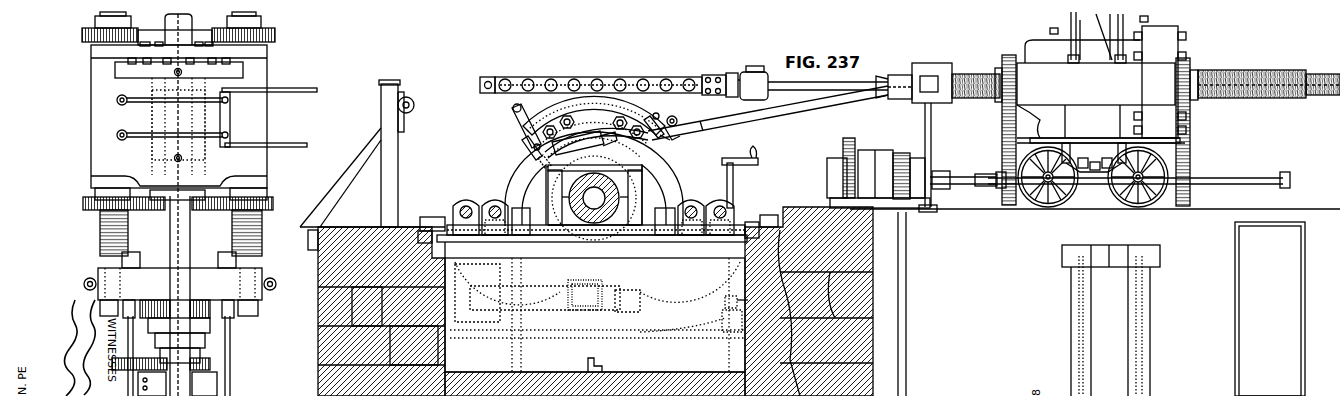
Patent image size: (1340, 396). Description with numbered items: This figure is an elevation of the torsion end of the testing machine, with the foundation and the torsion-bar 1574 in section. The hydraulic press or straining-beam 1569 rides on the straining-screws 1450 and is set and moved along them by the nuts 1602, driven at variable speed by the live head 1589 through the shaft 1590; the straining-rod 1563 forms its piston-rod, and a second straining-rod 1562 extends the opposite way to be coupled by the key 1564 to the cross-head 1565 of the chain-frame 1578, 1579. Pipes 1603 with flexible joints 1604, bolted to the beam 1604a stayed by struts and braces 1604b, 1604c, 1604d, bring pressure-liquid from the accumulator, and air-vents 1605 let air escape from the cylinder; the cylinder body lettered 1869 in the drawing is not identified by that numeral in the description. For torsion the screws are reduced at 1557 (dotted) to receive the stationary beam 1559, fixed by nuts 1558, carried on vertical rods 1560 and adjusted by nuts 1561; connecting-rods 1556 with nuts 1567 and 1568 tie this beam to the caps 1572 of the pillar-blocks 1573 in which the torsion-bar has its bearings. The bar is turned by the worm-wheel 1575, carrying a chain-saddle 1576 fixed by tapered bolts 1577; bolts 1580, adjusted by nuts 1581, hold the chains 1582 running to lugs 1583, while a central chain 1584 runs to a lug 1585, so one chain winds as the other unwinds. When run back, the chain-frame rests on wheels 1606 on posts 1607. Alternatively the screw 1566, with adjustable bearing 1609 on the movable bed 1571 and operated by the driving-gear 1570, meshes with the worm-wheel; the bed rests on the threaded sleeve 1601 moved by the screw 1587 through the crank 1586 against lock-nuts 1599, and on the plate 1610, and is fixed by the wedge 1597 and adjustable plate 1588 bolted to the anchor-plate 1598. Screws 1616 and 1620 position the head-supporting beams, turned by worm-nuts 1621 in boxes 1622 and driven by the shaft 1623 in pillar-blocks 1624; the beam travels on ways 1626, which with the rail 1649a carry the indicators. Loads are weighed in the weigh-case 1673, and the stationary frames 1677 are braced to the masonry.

The straining-screws 1450 is at (719, 156).
The connecting-rods 1556 is at (768, 113).
The reduced portions of straining-screws 1557 is at (893, 92).
The nuts 1558 is at (587, 185).
The stationary beam 1559 is at (525, 176).
The vertical rods 1560 is at (522, 197).
The nuts 1561 is at (615, 183).
The straining-rod 1562 is at (828, 83).
The straining-rod 1563 is at (752, 205).
The key 1564 is at (756, 63).
The cross-head 1565 is at (755, 86).
The screw 1566 is at (587, 292).
The nuts 1567 is at (180, 286).
The nuts 1568 is at (596, 143).
The hydraulic press or straining-beam 1569 is at (355, 177).
The driving-gear 1570 is at (473, 293).
The movable bed 1571 is at (597, 334).
The caps of pillar-blocks 1572 is at (594, 198).
The pillar-blocks 1573 is at (595, 218).
The torsion-bar 1574 is at (594, 198).
The worm-wheel 1575 is at (594, 178).
The chain-saddle 1576 is at (594, 125).
The tapered bolts 1577 is at (593, 127).
The chain-frame 1578 is at (473, 86).
The chain-frame 1579 is at (598, 79).
The bolts 1580 is at (716, 78).
The nuts 1581 is at (729, 91).
The chains 1582 is at (519, 122).
The lugs 1583 is at (525, 150).
The central chain 1584 is at (666, 120).
The lug 1585 is at (685, 126).
The crank 1586 is at (740, 155).
The screw 1587 is at (745, 185).
The adjustable plate 1588 is at (809, 301).
The live head 1589 is at (539, 248).
The shaft 1590 is at (1139, 178).
The wedge 1597 is at (756, 299).
The anchor-plate 1598 is at (736, 327).
The lock-nuts 1599 is at (720, 300).
The threaded sleeve 1601 is at (684, 324).
The nuts 1602 is at (645, 117).
The pipes 1603 is at (701, 112).
The flexible joints 1604 is at (621, 85).
The beam 1604a is at (240, 119).
The struts and braces 1604b is at (1110, 32).
The struts and braces 1604c is at (619, 77).
The struts and braces 1604d is at (1098, 32).
The air-vents 1605 is at (678, 87).
The wheels 1606 is at (422, 112).
The posts 1607 is at (365, 153).
The bearing 1609 is at (597, 295).
The plate 1610 is at (381, 311).
The screws 1616 is at (706, 224).
The screws 1620 is at (480, 217).
The worm-nuts 1621 is at (582, 210).
The boxes 1622 is at (735, 213).
The shaft 1623 is at (592, 233).
The pillar-blocks 1624 is at (590, 227).
The ways 1626 is at (773, 222).
The rail 1649a is at (608, 361).
The weigh-case 1673 is at (1270, 309).
The stationary frames 1677 is at (1111, 320).
The cylinder body 1869 is at (1101, 84).